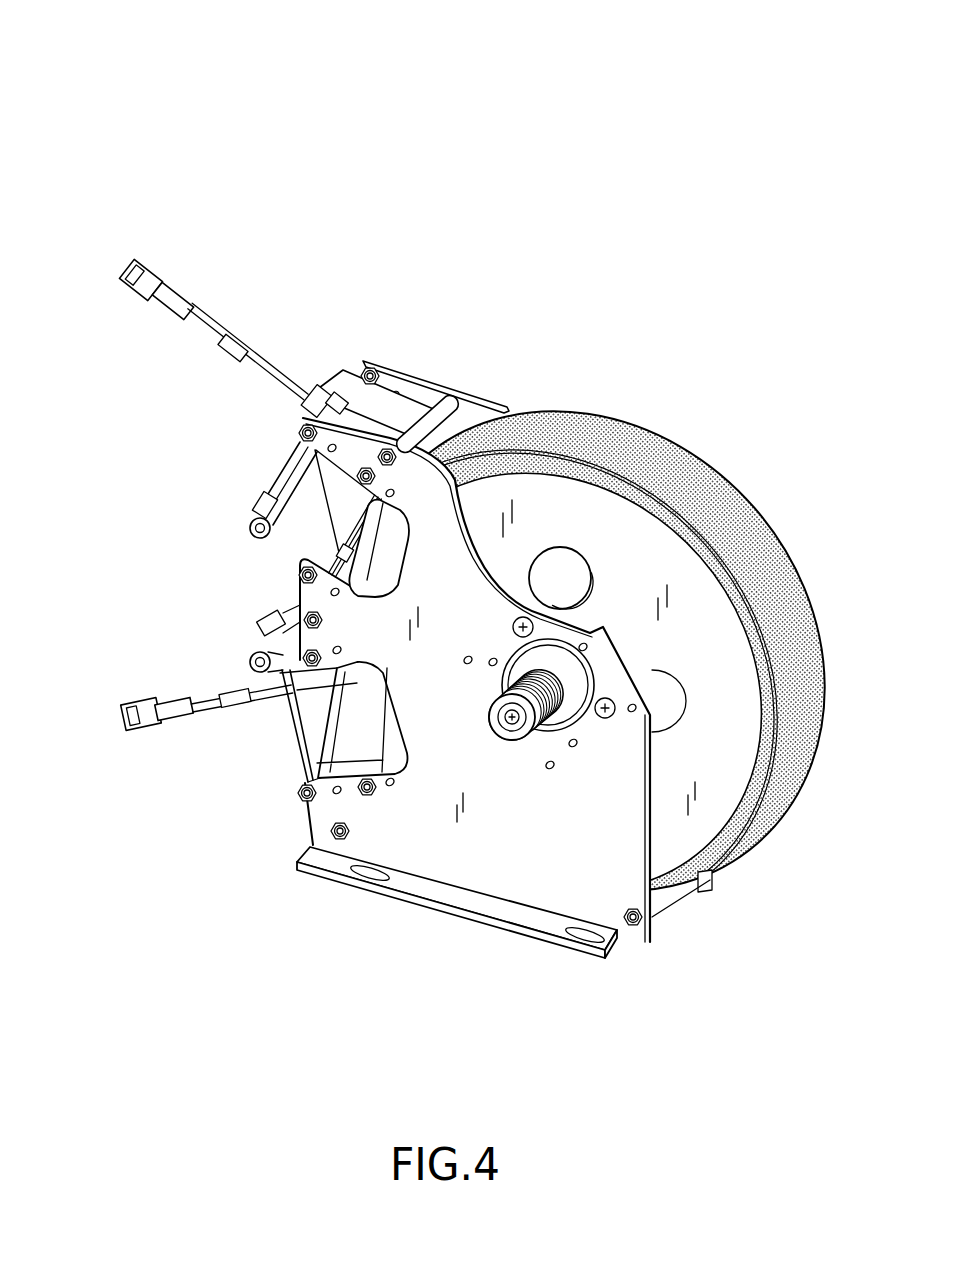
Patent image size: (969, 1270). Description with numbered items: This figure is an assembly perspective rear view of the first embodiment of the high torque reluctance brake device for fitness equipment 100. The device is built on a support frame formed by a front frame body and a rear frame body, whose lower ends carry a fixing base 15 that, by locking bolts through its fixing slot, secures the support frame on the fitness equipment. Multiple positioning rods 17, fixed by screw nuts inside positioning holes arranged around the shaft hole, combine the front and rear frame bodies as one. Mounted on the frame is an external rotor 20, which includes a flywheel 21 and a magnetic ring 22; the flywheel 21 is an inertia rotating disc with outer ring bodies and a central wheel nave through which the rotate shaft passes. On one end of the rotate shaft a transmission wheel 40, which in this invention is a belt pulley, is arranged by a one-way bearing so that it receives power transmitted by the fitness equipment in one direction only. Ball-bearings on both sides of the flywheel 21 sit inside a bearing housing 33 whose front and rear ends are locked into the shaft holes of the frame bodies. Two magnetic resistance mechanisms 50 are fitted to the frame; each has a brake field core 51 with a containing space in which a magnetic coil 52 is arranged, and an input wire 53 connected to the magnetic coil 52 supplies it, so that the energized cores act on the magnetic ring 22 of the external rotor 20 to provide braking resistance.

The high torque reluctance brake device for fitness equipment 100 is at (121, 50).
The fixing base 15 is at (445, 895).
The positioning rod 17 is at (437, 410).
The external rotor 20 is at (788, 382).
The flywheel 21 is at (638, 547).
The magnetic ring 22 is at (713, 507).
The bearing housing 33 is at (593, 722).
The transmission wheel 40 is at (573, 722).
The magnetic resistance mechanism 50 is at (77, 233).
The brake field core 51 is at (353, 388).
The magnetic coil 52 is at (313, 492).
The input wire 53 is at (138, 287).